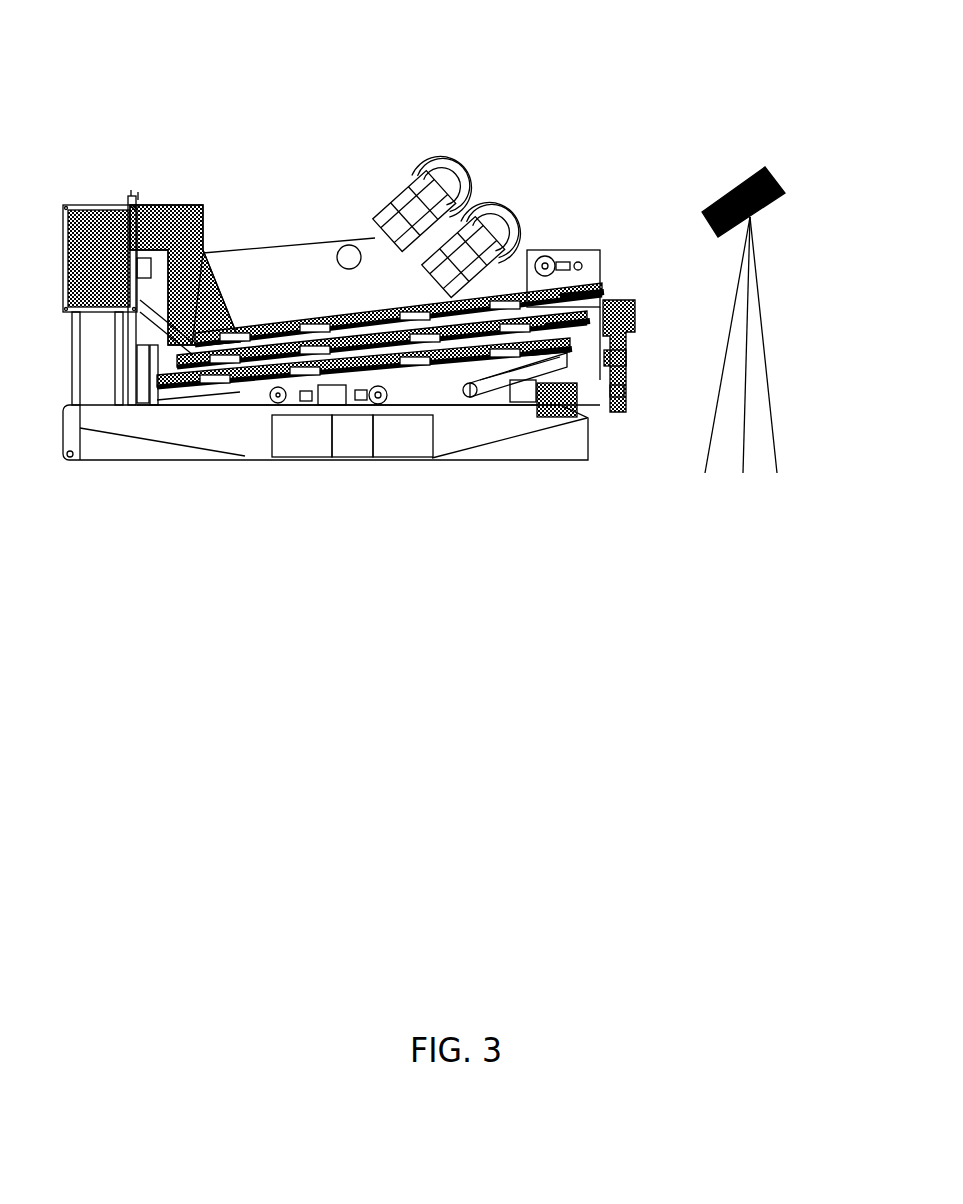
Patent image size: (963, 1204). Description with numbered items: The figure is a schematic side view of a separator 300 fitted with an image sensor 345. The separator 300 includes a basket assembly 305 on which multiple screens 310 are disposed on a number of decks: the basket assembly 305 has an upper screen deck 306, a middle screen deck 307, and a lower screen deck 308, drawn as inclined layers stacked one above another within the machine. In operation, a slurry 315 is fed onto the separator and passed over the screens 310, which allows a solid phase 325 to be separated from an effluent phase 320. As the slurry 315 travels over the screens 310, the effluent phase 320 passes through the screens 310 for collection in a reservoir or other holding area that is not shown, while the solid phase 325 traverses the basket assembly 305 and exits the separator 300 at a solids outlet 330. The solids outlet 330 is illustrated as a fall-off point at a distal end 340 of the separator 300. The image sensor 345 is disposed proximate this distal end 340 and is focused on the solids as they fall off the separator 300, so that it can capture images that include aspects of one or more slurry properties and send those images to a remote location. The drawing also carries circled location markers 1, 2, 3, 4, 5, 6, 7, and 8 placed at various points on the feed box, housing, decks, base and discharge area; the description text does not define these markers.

The separator 300 is at (254, 114).
The basket assembly 305 is at (187, 400).
The upper screen deck 306 is at (564, 295).
The middle screen deck 307 is at (580, 380).
The lower screen deck 308 is at (553, 342).
The screens 310 is at (275, 335).
The slurry 315 is at (103, 228).
The effluent phase 320 is at (326, 396).
The solid phase 325 is at (620, 364).
The solids outlet 330 is at (580, 380).
The distal end 340 is at (641, 310).
The image sensor 345 is at (776, 176).
The feed box location 1 is at (100, 265).
The housing location 2 is at (288, 280).
The base location 3 is at (242, 432).
The top deck location 4 is at (331, 318).
The middle deck location 5 is at (357, 338).
The bottom deck location 6 is at (387, 348).
The roller location 7 is at (398, 401).
The discharge location 8 is at (618, 396).